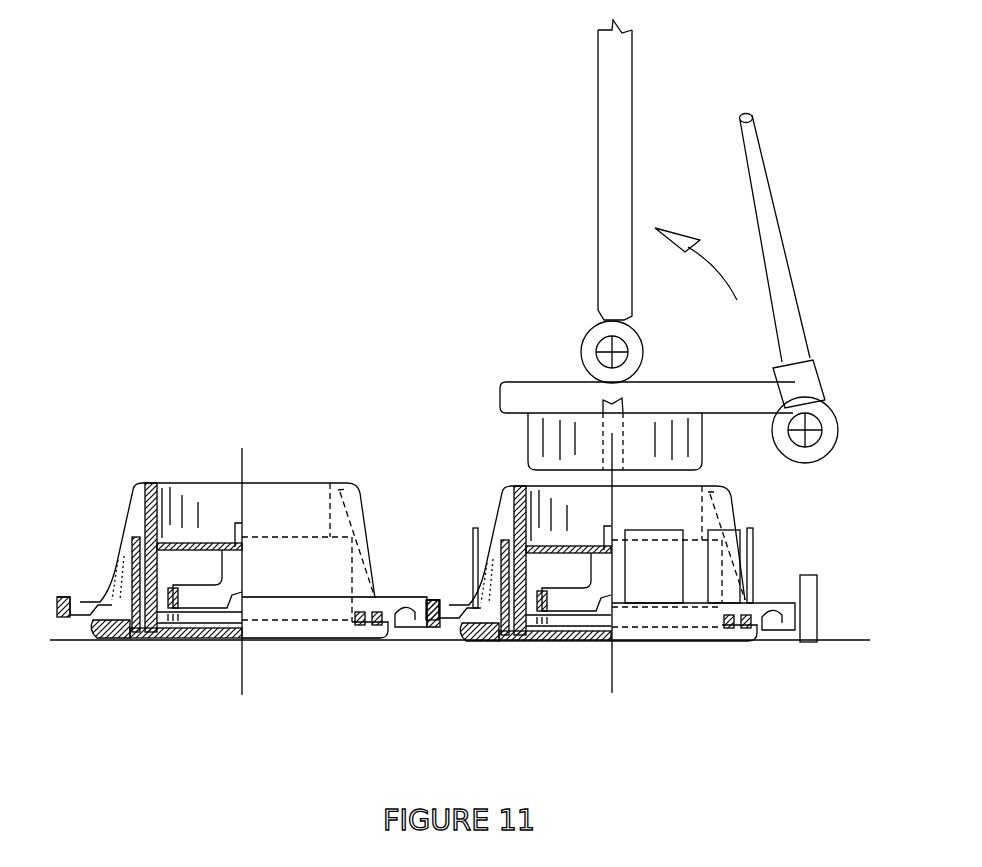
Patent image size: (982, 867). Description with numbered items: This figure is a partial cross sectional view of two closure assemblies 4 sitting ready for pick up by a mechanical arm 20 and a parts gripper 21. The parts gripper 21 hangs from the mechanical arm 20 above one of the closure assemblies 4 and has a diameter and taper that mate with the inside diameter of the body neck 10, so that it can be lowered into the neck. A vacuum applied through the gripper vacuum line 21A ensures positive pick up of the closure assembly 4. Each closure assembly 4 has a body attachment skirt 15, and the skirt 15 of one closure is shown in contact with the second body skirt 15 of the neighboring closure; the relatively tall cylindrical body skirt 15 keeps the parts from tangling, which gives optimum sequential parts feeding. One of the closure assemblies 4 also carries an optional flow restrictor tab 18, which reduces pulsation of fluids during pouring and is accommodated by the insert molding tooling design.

The closure assembly 4 is at (193, 458).
The body neck 10 is at (518, 518).
The body attachment skirt 15 is at (420, 622).
The flow restrictor tab 18 is at (753, 572).
The mechanical arm 20 is at (607, 167).
The parts gripper 21 is at (537, 442).
The gripper vacuum line 21A is at (607, 427).